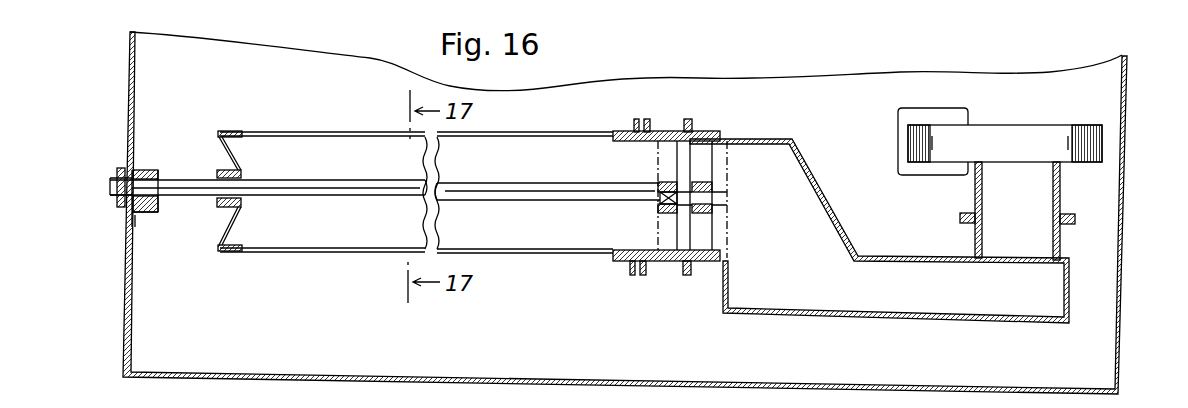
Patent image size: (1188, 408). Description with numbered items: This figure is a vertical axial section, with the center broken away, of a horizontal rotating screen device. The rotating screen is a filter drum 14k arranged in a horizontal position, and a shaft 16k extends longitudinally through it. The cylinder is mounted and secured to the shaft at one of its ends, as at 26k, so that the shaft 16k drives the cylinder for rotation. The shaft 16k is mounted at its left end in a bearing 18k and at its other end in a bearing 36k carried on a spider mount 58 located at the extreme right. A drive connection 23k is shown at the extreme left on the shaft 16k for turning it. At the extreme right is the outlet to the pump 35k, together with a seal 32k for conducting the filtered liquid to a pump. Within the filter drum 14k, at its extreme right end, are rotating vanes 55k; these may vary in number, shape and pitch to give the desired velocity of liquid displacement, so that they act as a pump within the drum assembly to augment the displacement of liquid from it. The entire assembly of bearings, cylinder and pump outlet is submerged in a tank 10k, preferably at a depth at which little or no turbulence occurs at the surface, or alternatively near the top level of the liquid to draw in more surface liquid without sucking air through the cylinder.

The tank 10k is at (1120, 150).
The filter drum 14k is at (566, 130).
The shaft 16k is at (360, 188).
The bearing 18k is at (144, 172).
The drive connection 23k is at (118, 168).
The cylinder mounting 26k is at (238, 170).
The seal 32k is at (678, 273).
The outlet to the pump 35k is at (1025, 161).
The bearing 36k is at (709, 183).
The rotating vanes 55k is at (665, 171).
The spider mount 58 is at (707, 153).